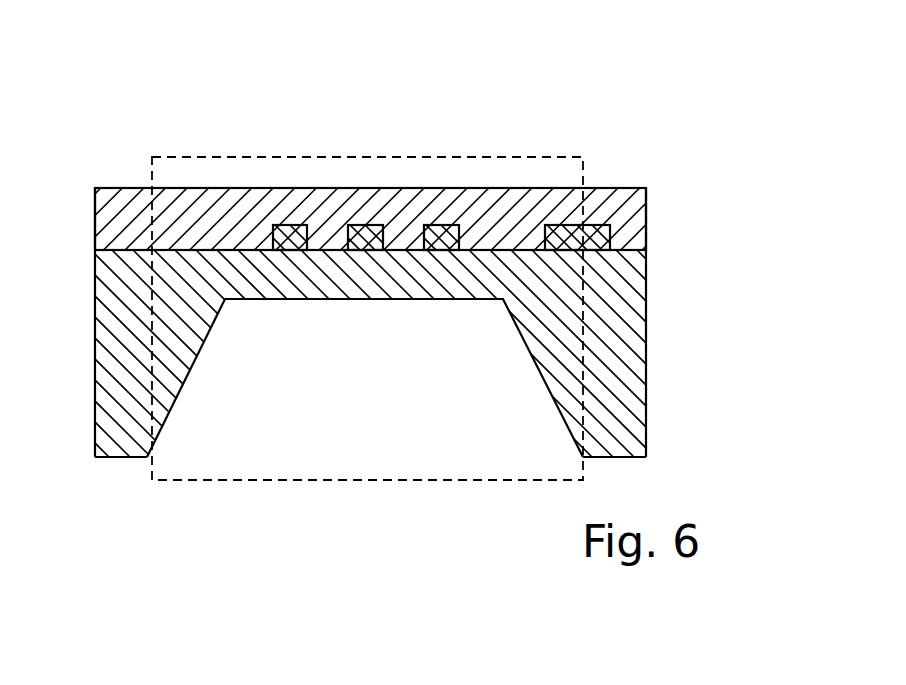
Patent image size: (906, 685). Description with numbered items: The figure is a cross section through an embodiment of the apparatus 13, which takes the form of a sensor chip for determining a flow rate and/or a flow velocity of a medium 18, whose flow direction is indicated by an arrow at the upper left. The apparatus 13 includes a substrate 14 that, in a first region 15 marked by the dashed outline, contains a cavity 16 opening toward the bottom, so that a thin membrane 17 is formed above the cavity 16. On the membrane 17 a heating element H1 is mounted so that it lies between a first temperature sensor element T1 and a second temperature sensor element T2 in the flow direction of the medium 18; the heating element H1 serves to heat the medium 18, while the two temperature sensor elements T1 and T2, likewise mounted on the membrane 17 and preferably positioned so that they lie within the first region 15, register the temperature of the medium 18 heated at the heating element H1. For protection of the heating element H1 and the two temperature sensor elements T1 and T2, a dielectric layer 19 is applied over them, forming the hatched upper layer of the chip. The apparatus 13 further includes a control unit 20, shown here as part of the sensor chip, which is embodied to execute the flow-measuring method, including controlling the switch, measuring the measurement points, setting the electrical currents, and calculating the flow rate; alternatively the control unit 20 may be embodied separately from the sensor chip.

The apparatus 13 is at (712, 108).
The substrate 14 is at (632, 364).
The first region 15 is at (209, 480).
The cavity 16 is at (377, 440).
The membrane 17 is at (251, 262).
The medium 18 is at (112, 92).
The dielectric layer 19 is at (630, 230).
The control unit 20 is at (600, 238).
The first temperature sensor element T1 is at (290, 238).
The heating element H1 is at (370, 238).
The second temperature sensor element T2 is at (446, 238).